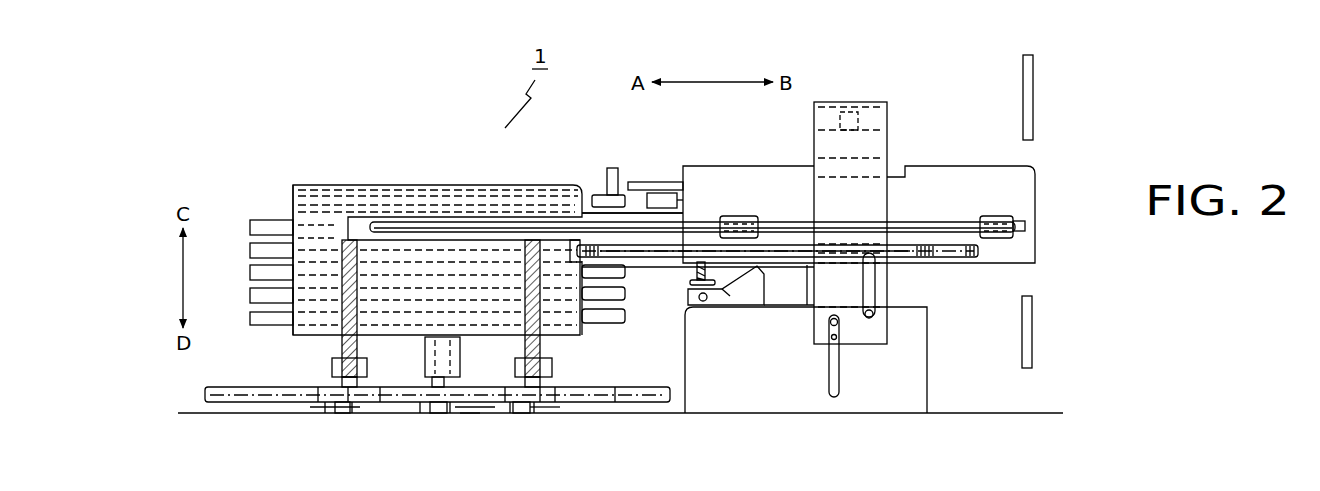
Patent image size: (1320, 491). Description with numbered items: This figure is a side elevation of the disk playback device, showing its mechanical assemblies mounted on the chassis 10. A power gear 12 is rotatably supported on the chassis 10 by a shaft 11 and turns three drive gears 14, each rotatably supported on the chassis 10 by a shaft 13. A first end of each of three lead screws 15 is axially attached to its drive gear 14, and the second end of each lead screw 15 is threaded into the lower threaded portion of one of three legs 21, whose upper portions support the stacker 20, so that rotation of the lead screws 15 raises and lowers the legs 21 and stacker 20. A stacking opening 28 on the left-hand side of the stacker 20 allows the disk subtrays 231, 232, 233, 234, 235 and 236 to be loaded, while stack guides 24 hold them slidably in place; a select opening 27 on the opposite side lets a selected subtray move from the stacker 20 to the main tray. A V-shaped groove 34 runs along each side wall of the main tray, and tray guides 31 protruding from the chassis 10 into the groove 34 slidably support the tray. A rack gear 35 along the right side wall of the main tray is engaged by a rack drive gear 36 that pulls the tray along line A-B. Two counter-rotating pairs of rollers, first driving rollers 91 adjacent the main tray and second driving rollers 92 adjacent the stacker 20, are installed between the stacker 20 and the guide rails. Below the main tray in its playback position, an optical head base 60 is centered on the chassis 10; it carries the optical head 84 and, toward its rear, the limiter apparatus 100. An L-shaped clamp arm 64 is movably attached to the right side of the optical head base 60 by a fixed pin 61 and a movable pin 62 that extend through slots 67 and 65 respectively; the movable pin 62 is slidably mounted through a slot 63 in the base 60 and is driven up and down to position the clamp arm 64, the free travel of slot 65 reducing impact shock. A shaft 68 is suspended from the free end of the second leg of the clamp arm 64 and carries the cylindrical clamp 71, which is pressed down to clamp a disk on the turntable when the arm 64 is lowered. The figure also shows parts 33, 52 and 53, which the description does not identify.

The chassis 10 is at (1030, 413).
The shaft 11 is at (460, 410).
The power gear 12 is at (237, 387).
The shaft 13 is at (362, 410).
The drive gear 14 is at (333, 410).
The lead screw 15 is at (342, 340).
The stacker 20 is at (452, 185).
The leg 21 is at (332, 366).
The stack guide 24 is at (333, 200).
The select opening 27 is at (582, 185).
The stacking opening 28 is at (293, 190).
The tray guide 31 is at (748, 216).
The stop plate 33 is at (1033, 112).
The V-shaped groove 34 is at (920, 225).
The rack gear 35 is at (975, 257).
The rack drive gear 36 is at (938, 257).
The actuating bar 52 is at (648, 183).
The pin 53 is at (613, 170).
The optical head base 60 is at (927, 380).
The fixed pin 61 is at (875, 320).
The movable pin 62 is at (829, 320).
The slot 63 is at (840, 380).
The L-shaped clamp arm 64 is at (812, 180).
The slot 65 is at (832, 336).
The slot 67 is at (868, 292).
The shaft 68 is at (862, 120).
The cylindrical clamp 71 is at (875, 147).
The optical head 84 is at (760, 308).
The first driving roller 91 is at (672, 196).
The second driving roller 92 is at (600, 195).
The limiter apparatus 100 is at (670, 323).
The disk subtray 231 is at (683, 202).
The disk subtray 232 is at (250, 222).
The disk subtray 233 is at (250, 248).
The disk subtray 234 is at (250, 272).
The disk subtray 235 is at (250, 296).
The disk subtray 236 is at (250, 320).